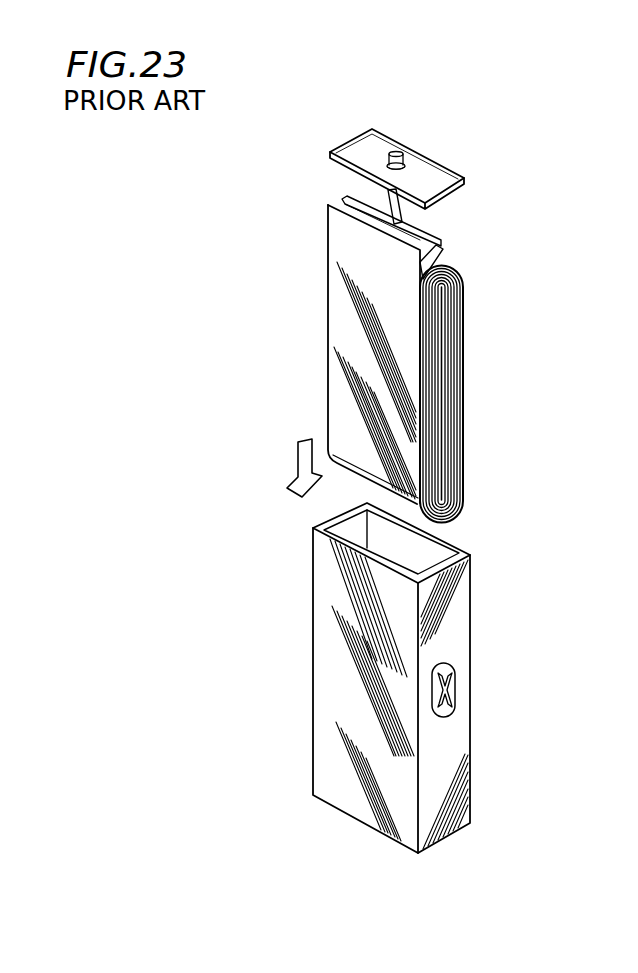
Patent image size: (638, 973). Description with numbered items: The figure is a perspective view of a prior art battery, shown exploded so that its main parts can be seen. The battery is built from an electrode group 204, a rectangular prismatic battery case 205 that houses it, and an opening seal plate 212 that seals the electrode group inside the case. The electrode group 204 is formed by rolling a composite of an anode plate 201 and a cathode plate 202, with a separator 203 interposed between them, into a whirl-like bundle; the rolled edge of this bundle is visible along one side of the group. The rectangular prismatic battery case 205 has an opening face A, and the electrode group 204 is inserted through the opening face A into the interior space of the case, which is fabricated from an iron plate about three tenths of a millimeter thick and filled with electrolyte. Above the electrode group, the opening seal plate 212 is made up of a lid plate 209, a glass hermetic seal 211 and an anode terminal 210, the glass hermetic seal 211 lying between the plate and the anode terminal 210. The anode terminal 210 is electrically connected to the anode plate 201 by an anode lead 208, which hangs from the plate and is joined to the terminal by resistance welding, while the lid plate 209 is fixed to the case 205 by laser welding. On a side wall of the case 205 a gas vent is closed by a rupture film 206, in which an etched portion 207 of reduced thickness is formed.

The anode plate 201 is at (441, 248).
The cathode plate 202 is at (345, 250).
The separator 203 is at (340, 202).
The electrode group 204 is at (465, 361).
The rectangular prismatic battery case 205 is at (338, 668).
The rupture film 206 is at (456, 681).
The etched portion 207 is at (450, 697).
The anode lead 208 is at (404, 213).
The lid plate 209 is at (350, 148).
The anode terminal 210 is at (396, 150).
The glass hermetic seal 211 is at (408, 162).
The opening seal plate 212 is at (428, 173).
The opening face A is at (426, 552).